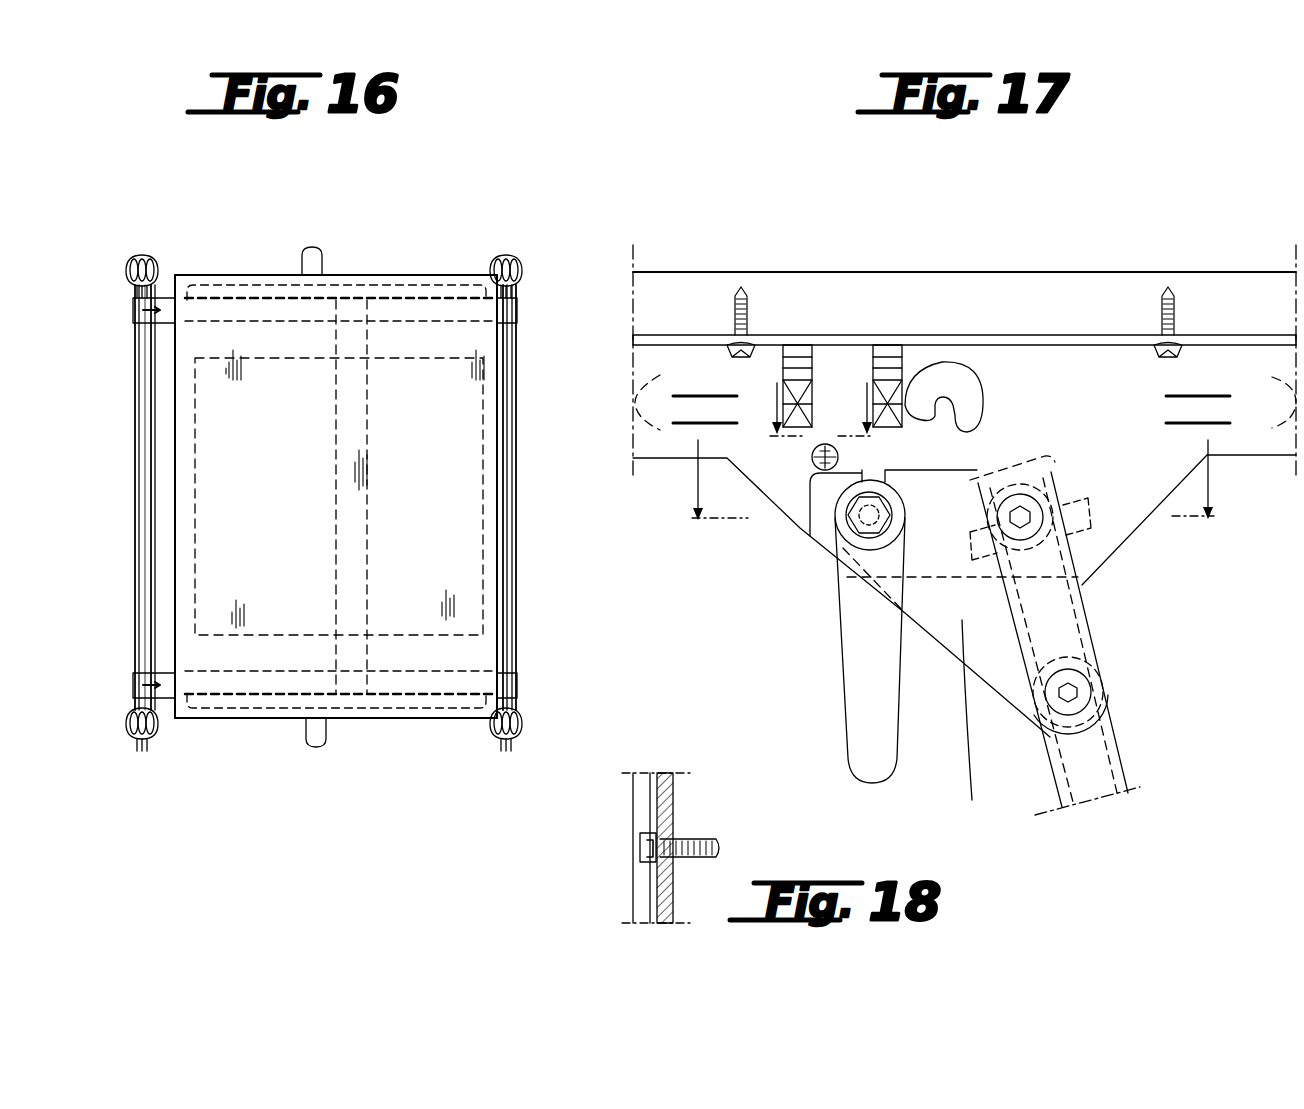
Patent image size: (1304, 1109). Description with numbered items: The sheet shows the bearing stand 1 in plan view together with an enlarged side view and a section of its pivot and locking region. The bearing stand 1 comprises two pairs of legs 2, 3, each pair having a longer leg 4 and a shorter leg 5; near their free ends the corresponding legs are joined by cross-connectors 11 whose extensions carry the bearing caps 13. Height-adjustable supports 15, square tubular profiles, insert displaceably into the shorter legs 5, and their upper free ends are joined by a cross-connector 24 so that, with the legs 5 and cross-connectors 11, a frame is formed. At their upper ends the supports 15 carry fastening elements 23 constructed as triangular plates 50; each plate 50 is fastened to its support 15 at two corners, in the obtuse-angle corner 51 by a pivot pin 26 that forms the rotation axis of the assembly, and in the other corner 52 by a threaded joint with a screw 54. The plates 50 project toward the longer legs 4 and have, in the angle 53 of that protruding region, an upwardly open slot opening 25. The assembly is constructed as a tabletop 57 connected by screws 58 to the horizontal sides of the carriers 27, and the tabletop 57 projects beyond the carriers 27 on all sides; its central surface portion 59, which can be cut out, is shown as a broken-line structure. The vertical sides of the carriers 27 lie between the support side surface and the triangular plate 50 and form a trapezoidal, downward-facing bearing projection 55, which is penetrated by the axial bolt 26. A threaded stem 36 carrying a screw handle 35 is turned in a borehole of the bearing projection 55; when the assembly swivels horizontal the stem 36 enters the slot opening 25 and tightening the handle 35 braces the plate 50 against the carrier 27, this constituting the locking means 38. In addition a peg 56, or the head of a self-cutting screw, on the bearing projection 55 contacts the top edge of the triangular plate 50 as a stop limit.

In FIG. 16, the bearing stand 1 is at (401, 232).
In FIG. 16, the leg pair 2 is at (226, 745).
In FIG. 16, the leg pair 3 is at (213, 245).
In FIG. 16, the longer leg 4 is at (160, 305).
In FIG. 16, the shorter leg 5 is at (512, 309).
In FIG. 16, the cross-connector 11 is at (150, 446).
In FIG. 16, the bearing cap 13 is at (138, 258).
In FIG. 17, the support 15 is at (1100, 768).
In FIG. 17, the fastening element 23 is at (1060, 611).
In FIG. 16, the cross-connector 24 is at (358, 596).
In FIG. 17, the slot opening 25 is at (899, 470).
In FIG. 17, the pivot pin 26 is at (1022, 522).
In FIG. 16, the carrier 27 is at (258, 295).
In FIG. 17, the carrier 27 is at (1006, 357).
In FIG. 16, the screw handle 35 is at (313, 266).
In FIG. 17, the screw handle 35 is at (866, 668).
In FIG. 17, the threaded stem 36 is at (860, 525).
In FIG. 16, the locking means 38 is at (308, 240).
In FIG. 17, the locking means 38 is at (822, 604).
In FIG. 17, the triangular plate 50 is at (964, 591).
In FIG. 18, the triangular plate 50 is at (642, 900).
In FIG. 17, the obtuse-angle corner 51 is at (1030, 484).
In FIG. 17, the corner 52 is at (1100, 681).
In FIG. 17, the angle 53 is at (828, 497).
In FIG. 17, the screw 54 is at (1070, 693).
In FIG. 17, the bearing projection 55 is at (1108, 520).
In FIG. 18, the bearing projection 55 is at (668, 814).
In FIG. 17, the peg 56 is at (827, 443).
In FIG. 18, the peg 56 is at (645, 849).
In FIG. 16, the tabletop 57 is at (452, 463).
In FIG. 17, the tabletop 57 is at (792, 290).
In FIG. 17, the screw 58 is at (742, 296).
In FIG. 16, the surface portion 59 is at (195, 560).